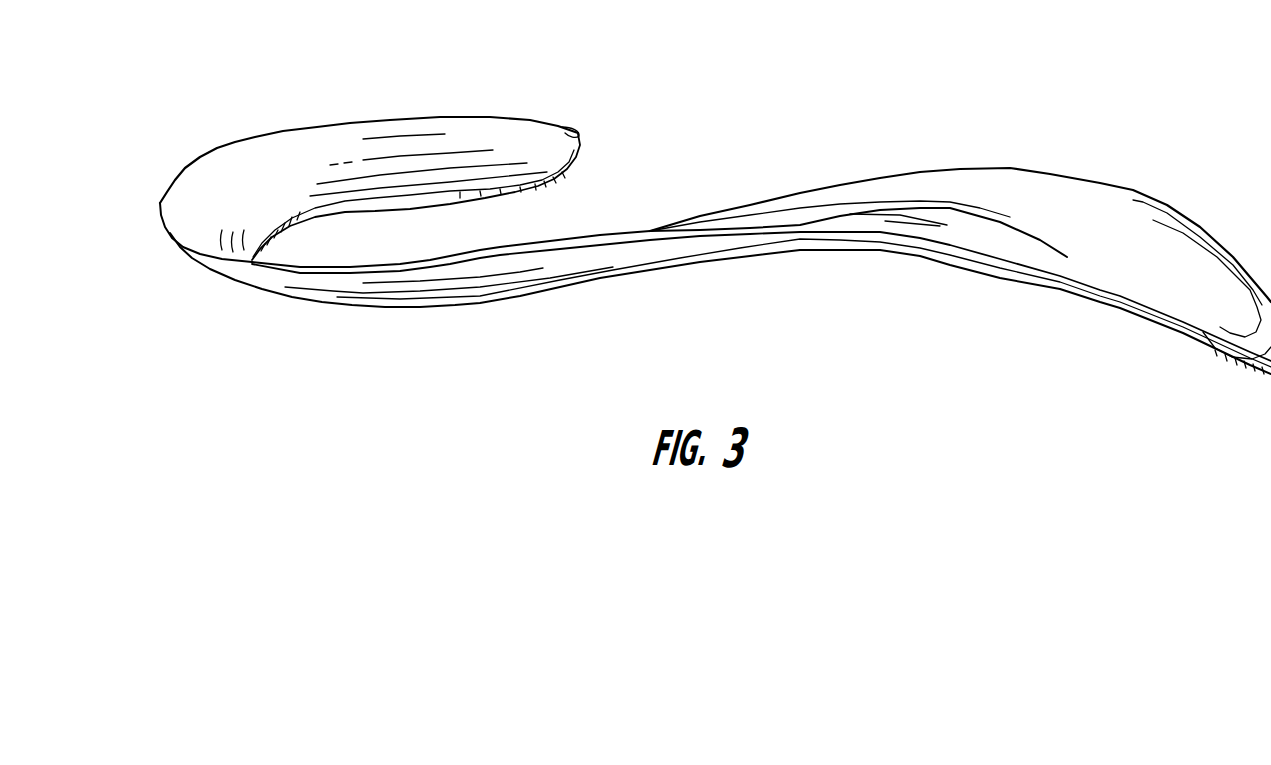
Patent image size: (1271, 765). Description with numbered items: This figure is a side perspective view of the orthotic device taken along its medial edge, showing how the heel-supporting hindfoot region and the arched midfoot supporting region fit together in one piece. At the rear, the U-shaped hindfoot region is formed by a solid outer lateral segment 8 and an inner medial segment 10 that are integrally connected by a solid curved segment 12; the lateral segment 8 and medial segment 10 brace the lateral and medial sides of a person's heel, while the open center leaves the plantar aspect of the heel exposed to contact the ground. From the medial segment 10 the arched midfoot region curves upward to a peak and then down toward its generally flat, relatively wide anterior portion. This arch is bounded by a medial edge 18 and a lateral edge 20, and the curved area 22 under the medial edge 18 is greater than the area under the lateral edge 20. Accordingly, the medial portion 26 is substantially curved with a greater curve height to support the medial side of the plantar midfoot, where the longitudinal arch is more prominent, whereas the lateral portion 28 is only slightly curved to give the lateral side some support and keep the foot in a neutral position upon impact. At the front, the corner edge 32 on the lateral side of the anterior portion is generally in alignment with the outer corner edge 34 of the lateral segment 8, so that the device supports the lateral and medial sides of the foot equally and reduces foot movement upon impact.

The lateral segment 8 is at (370, 135).
The medial segment 10 is at (333, 283).
The curved segment 12 is at (190, 207).
The medial edge 18 is at (729, 232).
The lateral edge 20 is at (882, 180).
The curved area under the medial edge 22 is at (525, 270).
The medial portion 26 is at (983, 233).
The lateral portion 28 is at (1045, 187).
The corner edge 32 is at (1140, 210).
The outer corner edge 34 is at (578, 133).